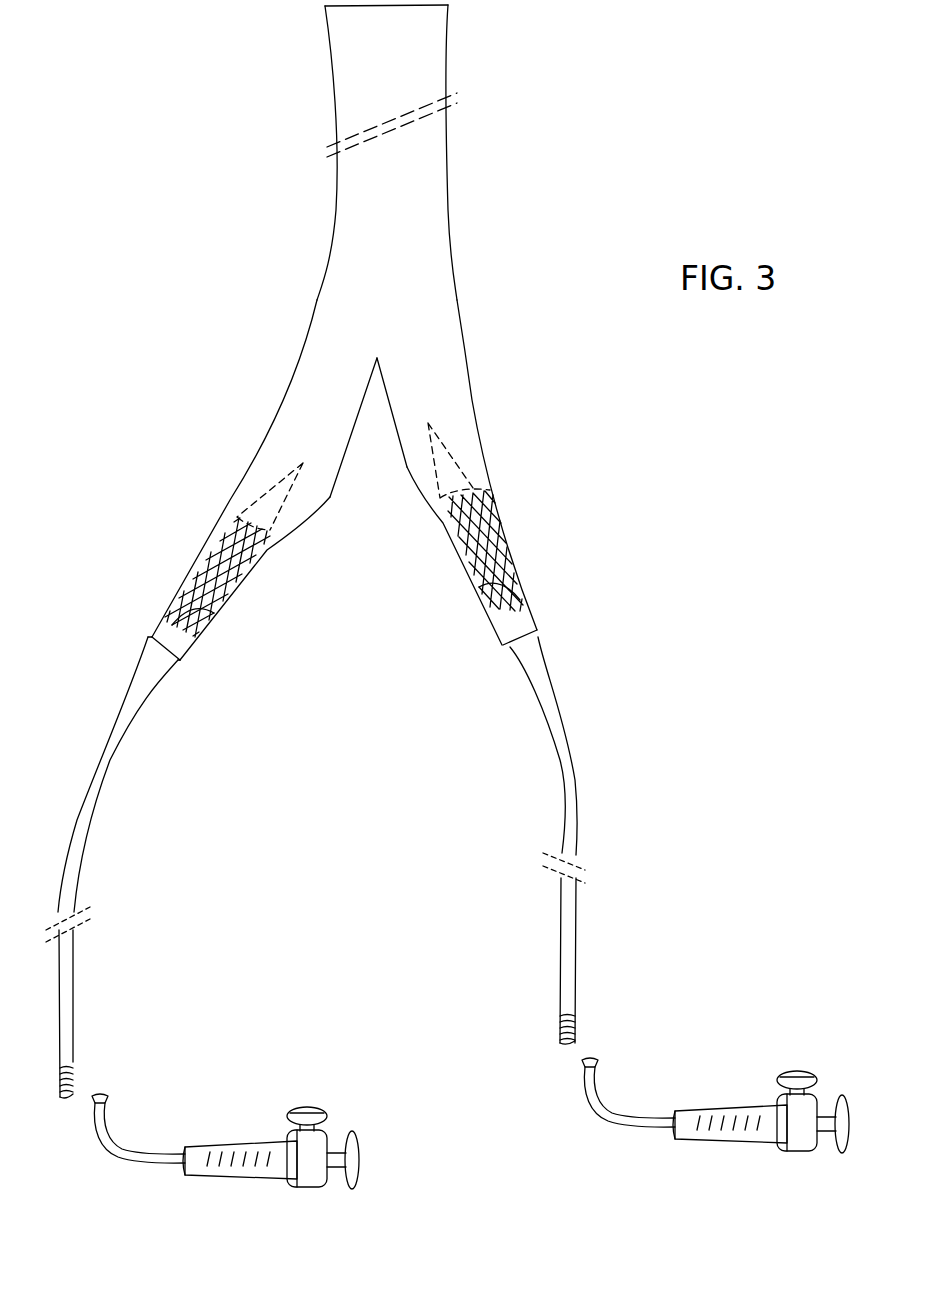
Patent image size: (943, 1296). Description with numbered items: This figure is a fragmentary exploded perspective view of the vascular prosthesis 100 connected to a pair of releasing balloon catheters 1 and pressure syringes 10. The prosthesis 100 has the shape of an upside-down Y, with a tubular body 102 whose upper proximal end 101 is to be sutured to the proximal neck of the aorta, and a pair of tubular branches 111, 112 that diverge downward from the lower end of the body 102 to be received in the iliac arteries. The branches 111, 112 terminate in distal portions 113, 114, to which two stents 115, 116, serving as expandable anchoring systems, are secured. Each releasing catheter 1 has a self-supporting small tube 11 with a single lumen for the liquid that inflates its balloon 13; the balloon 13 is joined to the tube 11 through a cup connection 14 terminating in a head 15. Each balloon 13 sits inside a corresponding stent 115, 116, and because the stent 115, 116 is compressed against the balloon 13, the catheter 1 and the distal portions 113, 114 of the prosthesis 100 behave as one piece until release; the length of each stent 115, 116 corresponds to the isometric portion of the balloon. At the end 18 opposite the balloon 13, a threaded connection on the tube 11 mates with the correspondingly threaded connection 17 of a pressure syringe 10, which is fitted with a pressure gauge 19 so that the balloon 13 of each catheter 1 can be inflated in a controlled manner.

The vascular prosthesis 100 is at (324, 63).
The upper proximal end 101 is at (448, 48).
The tubular body 102 is at (398, 248).
The tubular branch 111 is at (288, 387).
The tubular branch 112 is at (475, 397).
The distal portion 113 is at (245, 585).
The distal portion 114 is at (493, 477).
The stent 115 is at (180, 590).
The stent 116 is at (481, 600).
The balloon 13 is at (230, 502).
The cup connection 14 is at (148, 637).
The head 15 is at (430, 437).
The small tube 11 is at (97, 772).
The releasing balloon catheter 1 is at (84, 872).
The end 18 is at (73, 1077).
The pressure syringe 10 is at (183, 1123).
The pressure gauge 19 is at (303, 1113).
The threaded connection 17 is at (97, 1135).